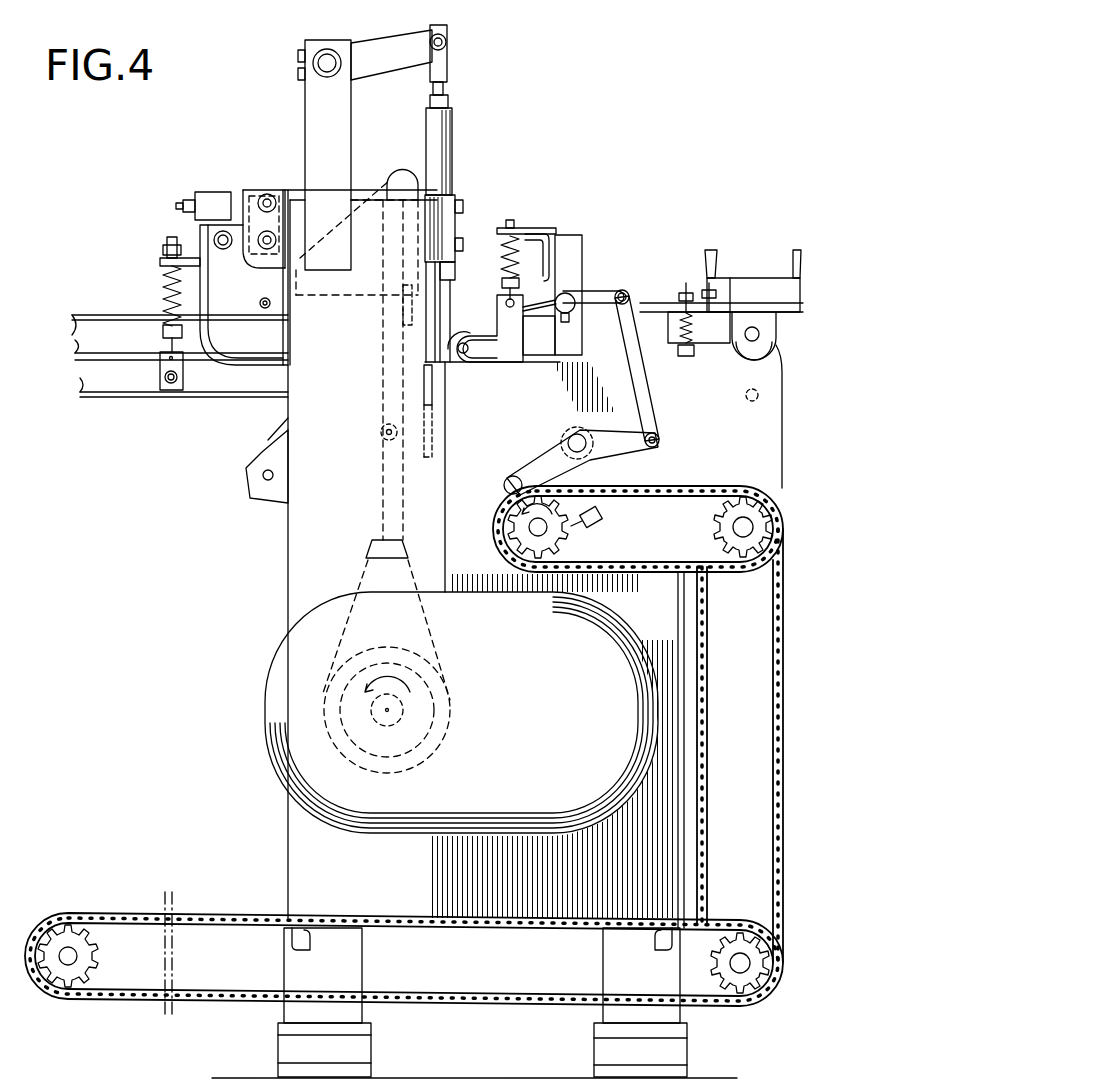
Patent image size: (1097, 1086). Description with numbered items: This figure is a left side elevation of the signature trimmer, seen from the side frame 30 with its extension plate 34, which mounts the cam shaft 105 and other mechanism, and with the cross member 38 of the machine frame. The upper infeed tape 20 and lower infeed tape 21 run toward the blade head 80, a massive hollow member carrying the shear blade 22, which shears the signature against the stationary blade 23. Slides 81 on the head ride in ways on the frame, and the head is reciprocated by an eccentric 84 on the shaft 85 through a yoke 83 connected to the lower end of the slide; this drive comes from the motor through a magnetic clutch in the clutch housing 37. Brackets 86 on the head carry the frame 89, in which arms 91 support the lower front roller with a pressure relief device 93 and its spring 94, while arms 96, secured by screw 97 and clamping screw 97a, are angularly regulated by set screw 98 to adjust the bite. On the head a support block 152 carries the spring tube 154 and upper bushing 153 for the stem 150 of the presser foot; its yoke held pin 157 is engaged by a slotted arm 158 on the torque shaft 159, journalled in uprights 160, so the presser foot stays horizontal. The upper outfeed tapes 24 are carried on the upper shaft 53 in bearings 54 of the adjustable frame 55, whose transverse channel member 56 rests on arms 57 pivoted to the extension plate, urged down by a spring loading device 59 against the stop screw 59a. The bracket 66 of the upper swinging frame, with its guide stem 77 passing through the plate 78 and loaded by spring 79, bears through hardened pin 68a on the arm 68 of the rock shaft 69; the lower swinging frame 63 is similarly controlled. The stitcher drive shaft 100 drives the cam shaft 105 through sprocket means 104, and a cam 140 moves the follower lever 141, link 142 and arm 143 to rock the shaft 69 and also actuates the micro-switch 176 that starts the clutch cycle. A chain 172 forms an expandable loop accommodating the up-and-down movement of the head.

The upper infeed tape 20 is at (168, 337).
The lower infeed tape 21 is at (170, 382).
The shear blade 22 is at (408, 328).
The stationary blade 23 is at (424, 386).
The upper outfeed tapes 24 is at (475, 327).
The side frame 30 is at (352, 527).
The extension plate 34 is at (510, 440).
The clutch housing 37 is at (266, 694).
The cross member 38 is at (558, 238).
The upper shaft 53 is at (754, 328).
The bearings 54 is at (776, 340).
The adjustable frame 55 is at (731, 252).
The transverse channel member 56 is at (760, 278).
The arms 57 is at (650, 300).
The spring loading device 59 is at (688, 358).
The stop screw 59a is at (722, 280).
The lower swinging frame 63 is at (468, 352).
The bracket 66 is at (520, 353).
The arm 68 is at (533, 303).
The hardened pin 68a is at (506, 303).
The rock shaft 69 is at (570, 294).
The guide stem 77 is at (510, 226).
The plate 78 is at (532, 232).
The spring 79 is at (506, 264).
The blade head 80 is at (395, 180).
The slides 81 is at (384, 355).
The yoke 83 is at (425, 633).
The eccentric 84 is at (420, 668).
The shaft 85 is at (400, 722).
The brackets 86 is at (294, 195).
The frame 89 is at (267, 188).
The arms 91 is at (220, 382).
The pressure relief device 93 is at (154, 310).
The spring 94 is at (164, 286).
The arms 96 is at (268, 341).
The screw 97 is at (260, 304).
The clamping screw 97a is at (223, 250).
The set screw 98 is at (185, 208).
The drive shaft 100 is at (70, 948).
The sprocket means 104 is at (245, 905).
The cam shaft 105 is at (528, 527).
The cam 140 is at (500, 520).
The follower lever 141 is at (563, 448).
The link 142 is at (656, 404).
The arm 143 is at (626, 285).
The stem 150 is at (446, 90).
The support block 152 is at (455, 200).
The upper bushing 153 is at (450, 108).
The spring tube 154 is at (454, 145).
The yoke held pin 157 is at (447, 42).
The slotted arm 158 is at (388, 32).
The torque shaft 159 is at (327, 50).
The uprights 160 is at (315, 118).
The chain 172 is at (264, 442).
The micro-switch 176 is at (598, 520).